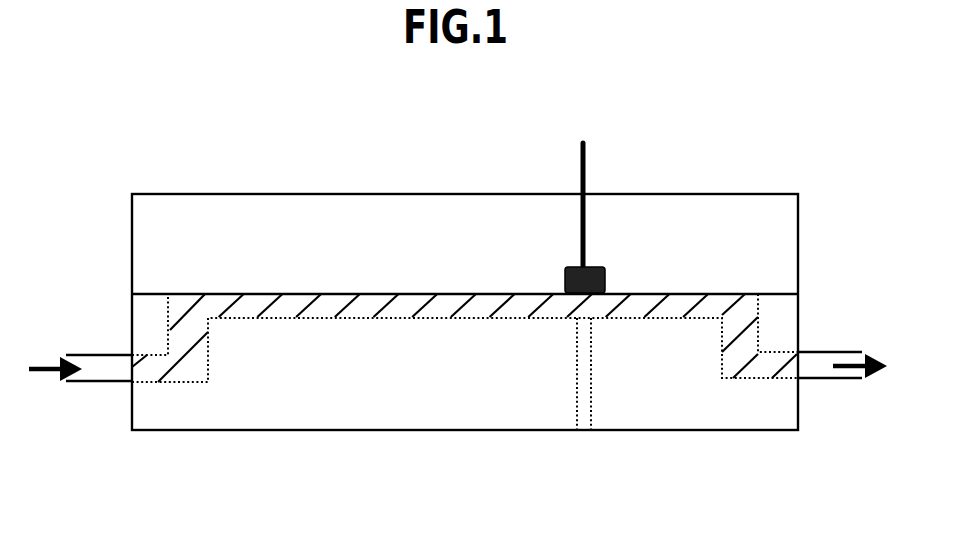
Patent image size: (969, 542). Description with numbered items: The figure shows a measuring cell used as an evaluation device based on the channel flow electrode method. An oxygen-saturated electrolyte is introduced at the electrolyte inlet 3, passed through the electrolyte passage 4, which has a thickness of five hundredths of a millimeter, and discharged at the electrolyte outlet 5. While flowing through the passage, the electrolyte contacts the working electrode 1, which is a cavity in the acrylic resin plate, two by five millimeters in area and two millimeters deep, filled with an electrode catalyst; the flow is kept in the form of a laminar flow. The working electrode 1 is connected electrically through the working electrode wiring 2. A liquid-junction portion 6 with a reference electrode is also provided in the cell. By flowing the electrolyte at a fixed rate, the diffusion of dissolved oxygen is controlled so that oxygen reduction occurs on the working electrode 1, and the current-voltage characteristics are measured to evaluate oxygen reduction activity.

The working electrode 1 is at (570, 267).
The working electrode wiring 2 is at (577, 180).
The electrolyte inlet 3 is at (107, 370).
The electrolyte passage 4 is at (720, 303).
The electrolyte outlet 5 is at (823, 366).
The liquid-junction portion 6 is at (583, 412).